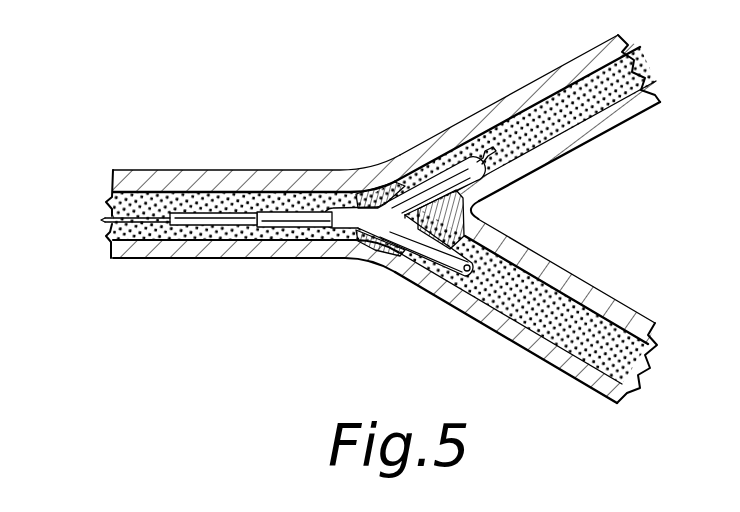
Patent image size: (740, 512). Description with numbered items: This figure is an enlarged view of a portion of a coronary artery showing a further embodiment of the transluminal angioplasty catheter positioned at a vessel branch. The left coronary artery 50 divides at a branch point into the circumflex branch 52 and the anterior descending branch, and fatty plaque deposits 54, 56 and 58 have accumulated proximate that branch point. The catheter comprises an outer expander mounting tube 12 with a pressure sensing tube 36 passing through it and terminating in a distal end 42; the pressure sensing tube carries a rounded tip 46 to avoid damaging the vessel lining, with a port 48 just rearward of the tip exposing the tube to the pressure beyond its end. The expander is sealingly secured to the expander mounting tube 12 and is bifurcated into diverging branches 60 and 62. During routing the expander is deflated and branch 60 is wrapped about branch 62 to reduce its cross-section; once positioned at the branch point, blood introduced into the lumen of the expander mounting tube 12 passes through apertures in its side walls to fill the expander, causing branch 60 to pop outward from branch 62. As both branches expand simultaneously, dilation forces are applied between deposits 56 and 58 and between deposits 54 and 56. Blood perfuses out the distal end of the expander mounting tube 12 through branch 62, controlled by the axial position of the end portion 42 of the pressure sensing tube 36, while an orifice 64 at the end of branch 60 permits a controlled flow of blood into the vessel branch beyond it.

The expander mounting tube 12 is at (218, 220).
The pressure sensing tube 36 is at (105, 223).
The distal end of the pressure sensing tube 42 is at (496, 148).
The rounded tip 46 is at (192, 172).
The port 48 is at (375, 168).
The left coronary artery 50 is at (543, 112).
The circumflex branch 52 is at (552, 282).
The fatty deposit 54 is at (384, 258).
The fatty deposit 56 is at (486, 206).
The fatty deposit 58 is at (398, 188).
The expander branch 60 is at (437, 278).
The expander branch 62 is at (441, 172).
The orifice 64 is at (467, 281).